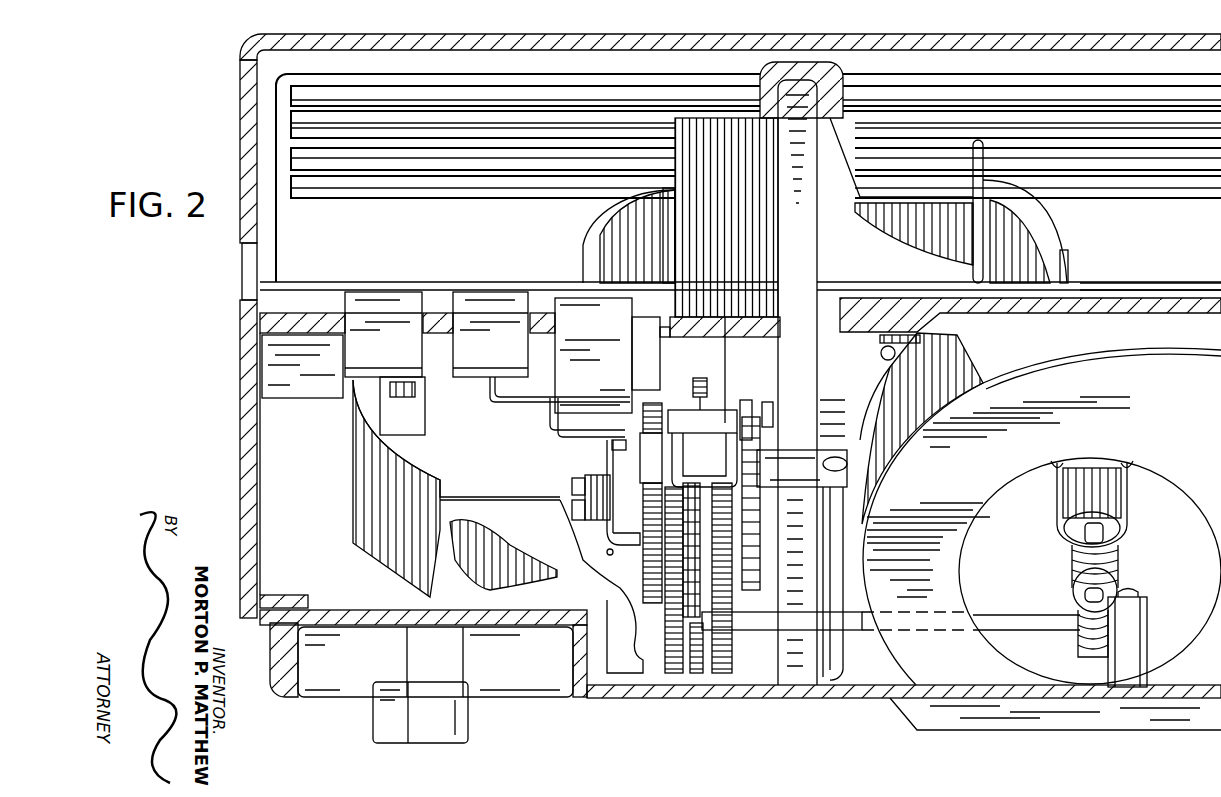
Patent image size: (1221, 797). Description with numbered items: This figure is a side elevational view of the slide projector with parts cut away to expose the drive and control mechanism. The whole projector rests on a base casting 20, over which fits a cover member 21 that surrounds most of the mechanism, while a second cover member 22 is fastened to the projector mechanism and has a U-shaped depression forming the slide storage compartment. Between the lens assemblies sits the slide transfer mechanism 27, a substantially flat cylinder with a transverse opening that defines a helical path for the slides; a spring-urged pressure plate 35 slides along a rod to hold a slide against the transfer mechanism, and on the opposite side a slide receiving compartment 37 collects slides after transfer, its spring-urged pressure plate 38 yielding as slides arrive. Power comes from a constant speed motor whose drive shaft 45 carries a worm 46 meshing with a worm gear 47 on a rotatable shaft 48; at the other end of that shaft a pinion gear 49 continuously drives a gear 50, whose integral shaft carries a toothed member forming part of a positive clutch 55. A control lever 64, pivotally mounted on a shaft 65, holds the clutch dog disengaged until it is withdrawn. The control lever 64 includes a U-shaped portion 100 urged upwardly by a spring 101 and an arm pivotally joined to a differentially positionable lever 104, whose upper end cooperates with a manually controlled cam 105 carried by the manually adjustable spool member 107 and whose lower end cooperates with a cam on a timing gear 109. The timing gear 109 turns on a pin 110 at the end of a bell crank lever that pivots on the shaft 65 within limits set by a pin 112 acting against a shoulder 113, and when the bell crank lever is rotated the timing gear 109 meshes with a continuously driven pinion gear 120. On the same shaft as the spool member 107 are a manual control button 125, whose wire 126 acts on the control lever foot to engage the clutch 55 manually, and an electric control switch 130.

The base casting 20 is at (280, 680).
The cover member 21 is at (245, 385).
The cover member 22 is at (423, 250).
The slide transfer mechanism 27 is at (807, 245).
The pressure plate 35 is at (672, 128).
The slide receiving compartment 37 is at (1197, 256).
The pressure plate 38 is at (985, 158).
The drive shaft 45 is at (1111, 539).
The worm 46 is at (1113, 570).
The worm gear 47 is at (1080, 638).
The rotatable shaft 48 is at (990, 620).
The pinion gear 49 is at (723, 652).
The gear 50 is at (730, 540).
The positive clutch 55 is at (764, 404).
The control lever 64 is at (737, 403).
The shaft 65 is at (847, 465).
The U-shaped portion 100 is at (737, 430).
The spring 101 is at (700, 380).
The differentially positionable lever 104 is at (662, 357).
The manually controlled cam 105 is at (665, 327).
The manually adjustable spool member 107 is at (607, 336).
The timing gear 109 is at (643, 562).
The pin 110 is at (572, 482).
The pin 112 is at (620, 445).
The shoulder 113 is at (620, 443).
The pinion gear 120 is at (643, 600).
The manual control button 125 is at (503, 360).
The wire 126 is at (567, 398).
The electric control switch 130 is at (397, 360).